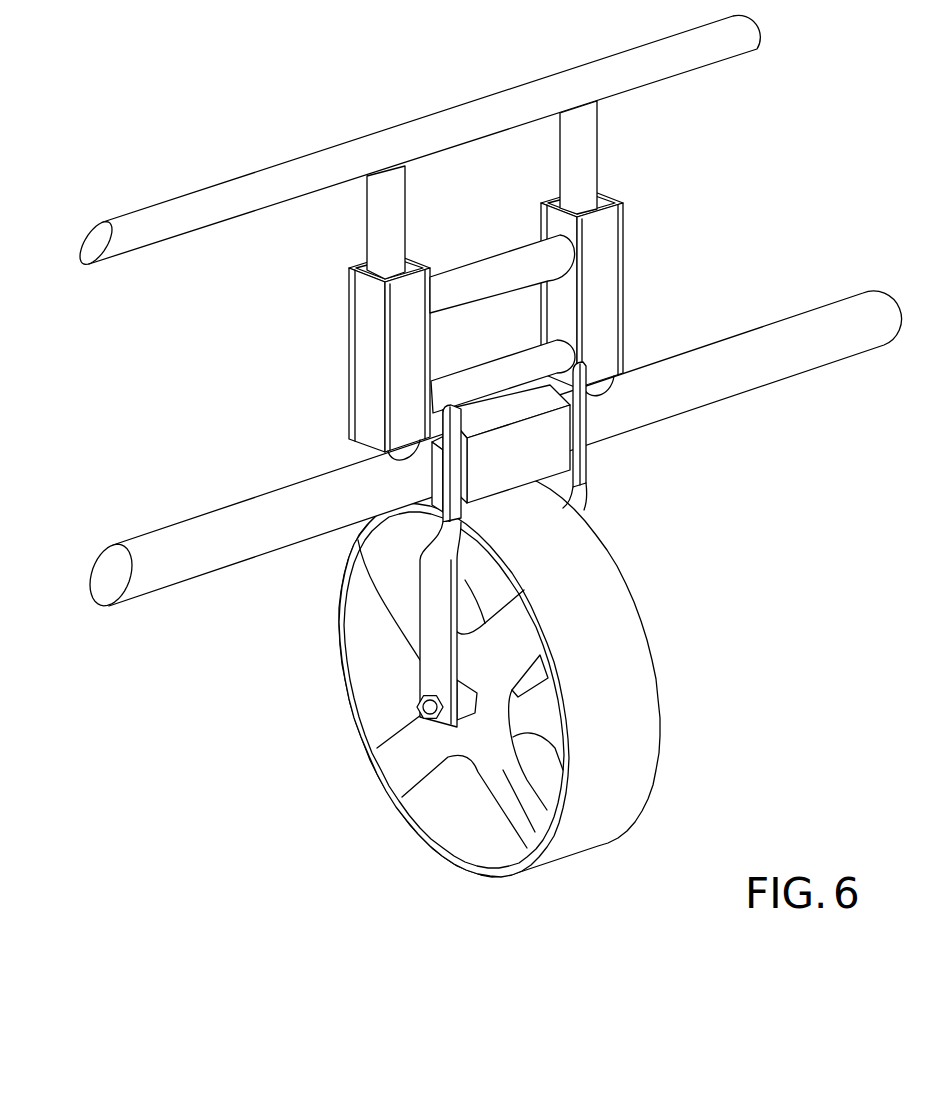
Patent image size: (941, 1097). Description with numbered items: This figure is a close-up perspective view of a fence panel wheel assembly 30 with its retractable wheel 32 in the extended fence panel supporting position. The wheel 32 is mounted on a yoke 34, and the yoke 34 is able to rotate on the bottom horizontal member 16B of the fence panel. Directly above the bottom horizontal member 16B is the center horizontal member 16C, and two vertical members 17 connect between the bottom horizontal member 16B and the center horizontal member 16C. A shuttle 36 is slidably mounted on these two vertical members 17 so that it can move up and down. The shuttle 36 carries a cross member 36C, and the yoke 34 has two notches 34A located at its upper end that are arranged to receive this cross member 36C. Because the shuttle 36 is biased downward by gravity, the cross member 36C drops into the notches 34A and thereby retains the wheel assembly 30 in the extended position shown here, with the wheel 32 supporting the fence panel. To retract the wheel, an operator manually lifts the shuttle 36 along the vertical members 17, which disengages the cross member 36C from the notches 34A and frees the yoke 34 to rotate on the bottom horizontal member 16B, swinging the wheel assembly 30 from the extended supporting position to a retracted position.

The center horizontal member 16C is at (742, 38).
The bottom horizontal member 16B is at (788, 368).
The vertical members 17 is at (372, 216).
The shuttle 36 is at (537, 324).
The cross member 36C is at (511, 366).
The yoke 34 is at (485, 495).
The notches 34A is at (438, 410).
The wheel assembly 30 is at (564, 675).
The retractable wheel 32 is at (641, 750).